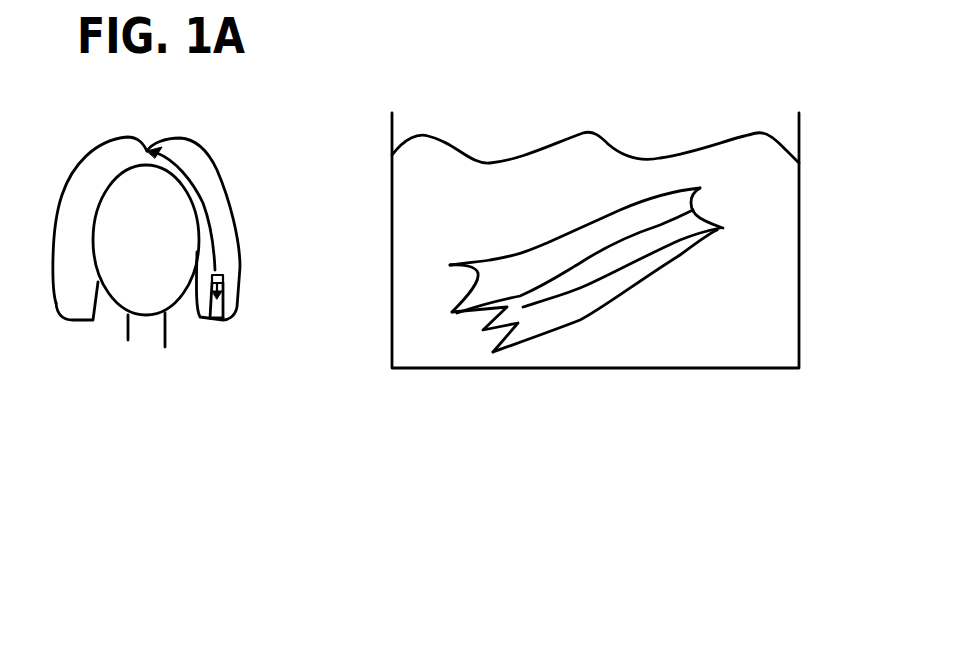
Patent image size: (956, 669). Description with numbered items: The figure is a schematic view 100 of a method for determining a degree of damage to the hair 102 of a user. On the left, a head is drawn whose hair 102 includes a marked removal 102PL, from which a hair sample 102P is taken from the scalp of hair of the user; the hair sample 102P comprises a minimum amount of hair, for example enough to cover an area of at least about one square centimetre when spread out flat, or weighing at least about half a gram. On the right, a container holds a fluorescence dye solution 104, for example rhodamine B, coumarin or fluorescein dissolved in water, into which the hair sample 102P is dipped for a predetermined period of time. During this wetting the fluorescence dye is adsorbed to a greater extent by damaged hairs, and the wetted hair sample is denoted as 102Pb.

The view 100 is at (649, 245).
The hair 102 is at (108, 155).
The removal 102PL is at (202, 190).
The hair sample 102P is at (212, 303).
The wetted hair sample 102Pb is at (586, 341).
The fluorescence dye solution 104 is at (715, 320).